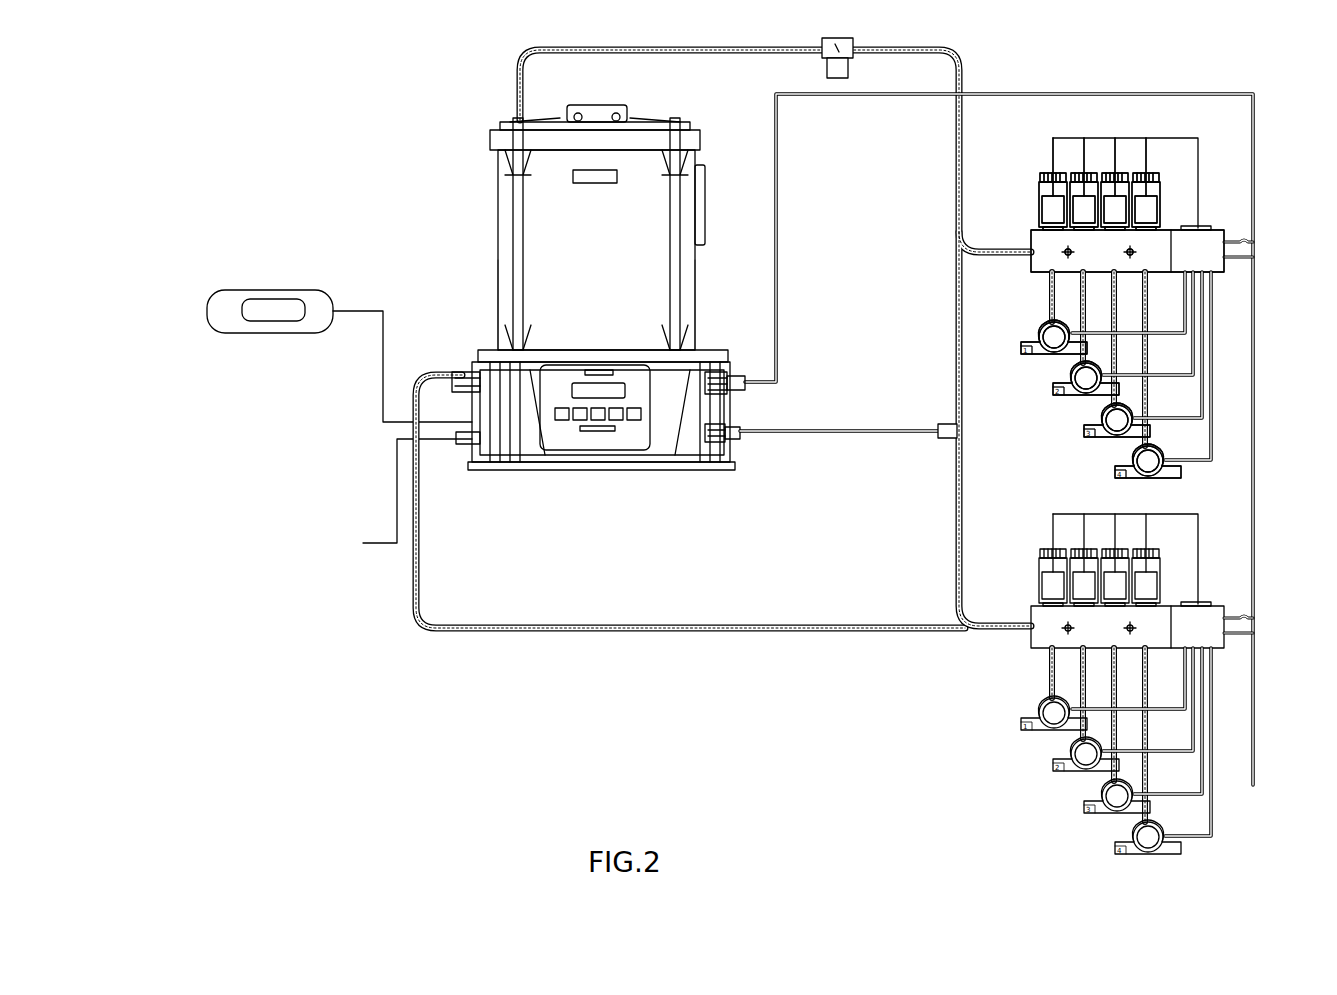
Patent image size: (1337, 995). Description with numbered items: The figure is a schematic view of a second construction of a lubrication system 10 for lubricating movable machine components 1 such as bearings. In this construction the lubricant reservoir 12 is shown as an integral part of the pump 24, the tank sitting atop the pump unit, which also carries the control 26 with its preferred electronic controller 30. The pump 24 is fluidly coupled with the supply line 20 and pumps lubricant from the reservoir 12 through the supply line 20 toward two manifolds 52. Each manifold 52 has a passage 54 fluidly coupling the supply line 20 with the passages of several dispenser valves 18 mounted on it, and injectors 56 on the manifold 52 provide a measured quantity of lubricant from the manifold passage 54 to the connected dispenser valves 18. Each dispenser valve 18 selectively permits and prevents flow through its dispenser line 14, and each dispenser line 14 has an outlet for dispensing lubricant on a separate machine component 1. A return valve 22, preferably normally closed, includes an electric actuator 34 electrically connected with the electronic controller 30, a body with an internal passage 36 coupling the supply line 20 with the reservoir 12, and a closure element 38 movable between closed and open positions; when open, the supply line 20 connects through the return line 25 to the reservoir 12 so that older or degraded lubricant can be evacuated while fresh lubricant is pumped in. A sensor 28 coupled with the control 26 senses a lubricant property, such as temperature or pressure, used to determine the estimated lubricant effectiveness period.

The lubrication system 10 is at (325, 191).
The lubricant reservoir 12 is at (489, 228).
The pump 24 is at (478, 287).
The return line 25 is at (717, 66).
The supply line 20 is at (830, 613).
The return valve 22 is at (874, 82).
The control 26 is at (620, 455).
The electronic controller 30 is at (565, 478).
The sensor 28 is at (943, 423).
The electric actuator 34 is at (826, 70).
The internal passage 36 is at (853, 46).
The closure element 38 is at (818, 36).
The manifold 52 is at (1026, 224).
The manifold passage 54 is at (1031, 247).
The injector 56 is at (1087, 272).
The dispenser valve 18 is at (1098, 154).
The dispenser line 14 is at (1050, 293).
The machine component 1 is at (1024, 395).